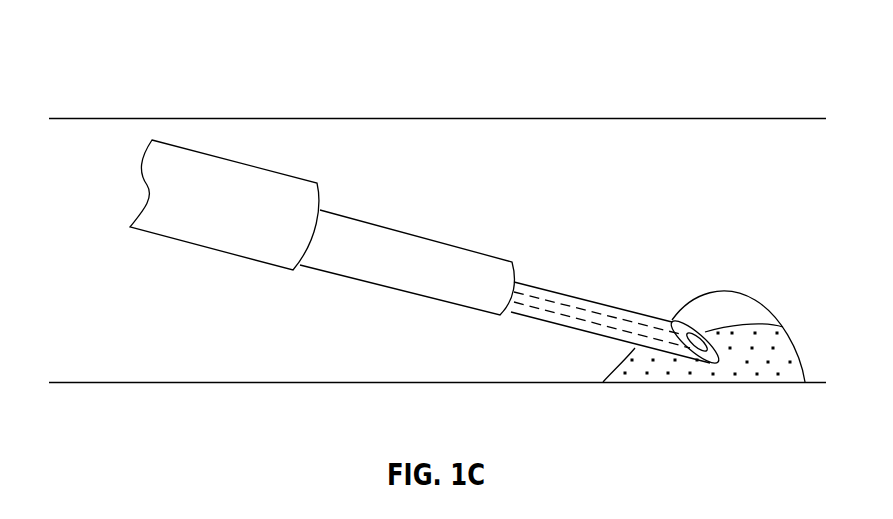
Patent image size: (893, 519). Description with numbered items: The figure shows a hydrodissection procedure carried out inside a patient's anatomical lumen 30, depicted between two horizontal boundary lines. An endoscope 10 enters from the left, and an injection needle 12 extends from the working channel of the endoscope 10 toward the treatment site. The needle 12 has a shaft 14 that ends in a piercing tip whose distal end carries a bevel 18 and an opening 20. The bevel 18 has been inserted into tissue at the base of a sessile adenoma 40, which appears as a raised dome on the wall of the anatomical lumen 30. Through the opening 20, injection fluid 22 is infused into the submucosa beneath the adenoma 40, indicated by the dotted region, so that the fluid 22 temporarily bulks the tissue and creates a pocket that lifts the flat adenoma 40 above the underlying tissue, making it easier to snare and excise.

The endoscope 10 is at (280, 173).
The injection needle 12 is at (585, 284).
The shaft 14 is at (528, 320).
The bevel 18 is at (676, 383).
The opening 20 is at (693, 330).
The injection fluid 22 is at (748, 328).
The anatomical lumen 30 is at (525, 119).
The sessile adenoma 40 is at (790, 343).